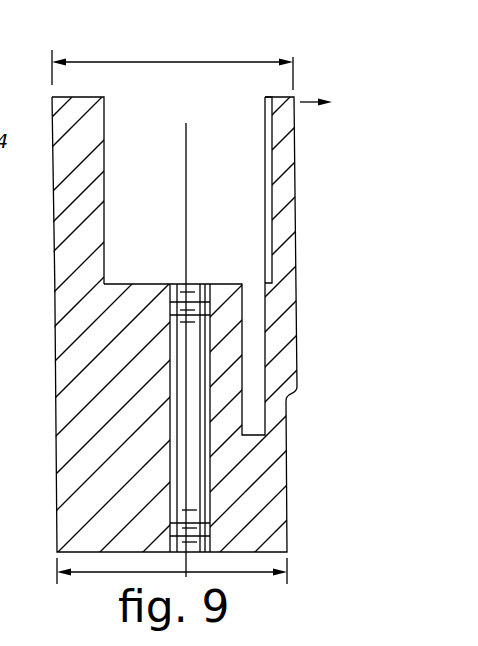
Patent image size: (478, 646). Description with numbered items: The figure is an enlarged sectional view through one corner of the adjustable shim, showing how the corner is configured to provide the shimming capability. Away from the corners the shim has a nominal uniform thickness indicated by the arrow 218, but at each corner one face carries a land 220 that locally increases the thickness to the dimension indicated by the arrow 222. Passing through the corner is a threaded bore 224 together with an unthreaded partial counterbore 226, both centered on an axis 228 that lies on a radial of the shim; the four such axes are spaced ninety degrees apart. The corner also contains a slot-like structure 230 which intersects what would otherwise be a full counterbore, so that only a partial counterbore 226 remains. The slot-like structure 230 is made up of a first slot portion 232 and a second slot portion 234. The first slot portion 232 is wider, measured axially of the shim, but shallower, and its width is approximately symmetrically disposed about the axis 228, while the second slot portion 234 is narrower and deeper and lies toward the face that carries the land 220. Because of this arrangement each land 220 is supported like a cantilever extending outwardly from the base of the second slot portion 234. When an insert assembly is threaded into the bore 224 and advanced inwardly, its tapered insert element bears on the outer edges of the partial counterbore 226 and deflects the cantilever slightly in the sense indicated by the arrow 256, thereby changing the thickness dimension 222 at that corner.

The nominal uniform thickness 218 is at (238, 575).
The land 220 is at (297, 340).
The locally increased thickness 222 is at (97, 62).
The threaded bore 224 is at (181, 382).
The unthreaded partial counterbore 226 is at (104, 211).
The axis 228 is at (188, 222).
The slot-like structure 230 is at (197, 97).
The first slot portion 232 is at (237, 251).
The second slot portion 234 is at (250, 391).
The deflection direction arrow 256 is at (303, 98).